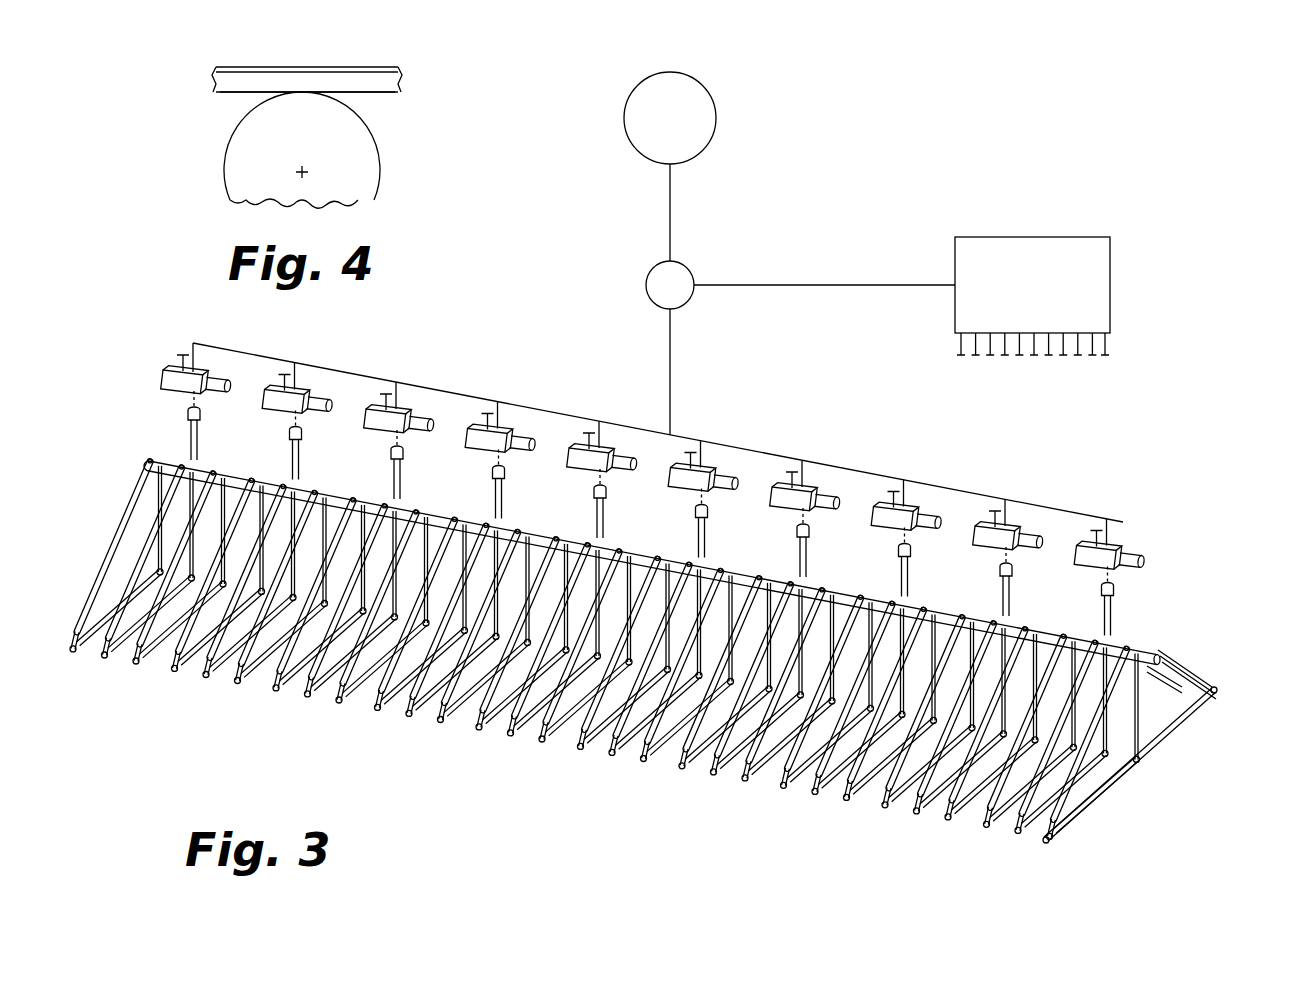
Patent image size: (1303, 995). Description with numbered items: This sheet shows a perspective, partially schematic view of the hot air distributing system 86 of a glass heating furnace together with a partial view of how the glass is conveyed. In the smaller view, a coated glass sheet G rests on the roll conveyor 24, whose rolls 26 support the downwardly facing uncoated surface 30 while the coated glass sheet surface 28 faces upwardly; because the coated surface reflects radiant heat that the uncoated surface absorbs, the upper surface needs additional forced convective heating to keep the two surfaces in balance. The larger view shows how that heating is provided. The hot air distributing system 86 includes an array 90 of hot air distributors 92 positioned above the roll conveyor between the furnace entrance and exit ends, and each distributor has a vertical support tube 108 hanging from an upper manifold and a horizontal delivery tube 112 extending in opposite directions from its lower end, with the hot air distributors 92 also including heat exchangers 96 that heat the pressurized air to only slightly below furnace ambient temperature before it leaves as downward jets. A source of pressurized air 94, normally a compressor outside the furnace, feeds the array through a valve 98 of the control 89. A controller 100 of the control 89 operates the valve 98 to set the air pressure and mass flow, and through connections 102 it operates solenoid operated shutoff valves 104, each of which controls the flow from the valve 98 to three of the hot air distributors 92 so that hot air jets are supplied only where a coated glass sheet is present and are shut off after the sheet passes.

In FIG. 4, the roll conveyor 24 is at (206, 161).
In FIG. 4, the rolls 26 is at (384, 144).
In FIG. 4, the coated glass sheet surface 28 is at (372, 67).
In FIG. 4, the uncoated surface 30 is at (378, 94).
In FIG. 4, the coated glass sheet G is at (256, 67).
In FIG. 3, the hot air distributing system 86 is at (1206, 571).
In FIG. 3, the control 89 is at (876, 151).
In FIG. 3, the array of hot air distributors 90 is at (1210, 673).
In FIG. 3, the hot air distributors 92 is at (432, 734).
In FIG. 3, the source of pressurized air 94 is at (706, 86).
In FIG. 3, the heat exchangers 96 is at (466, 716).
In FIG. 3, the valve 98 is at (689, 268).
In FIG. 3, the controller 100 is at (1040, 248).
In FIG. 3, the connections 102 is at (962, 343).
In FIG. 3, the solenoid operated shutoff valves 104 is at (196, 386).
In FIG. 3, the vertical support tube 108 is at (1146, 748).
In FIG. 3, the horizontal delivery tube 112 is at (1102, 802).